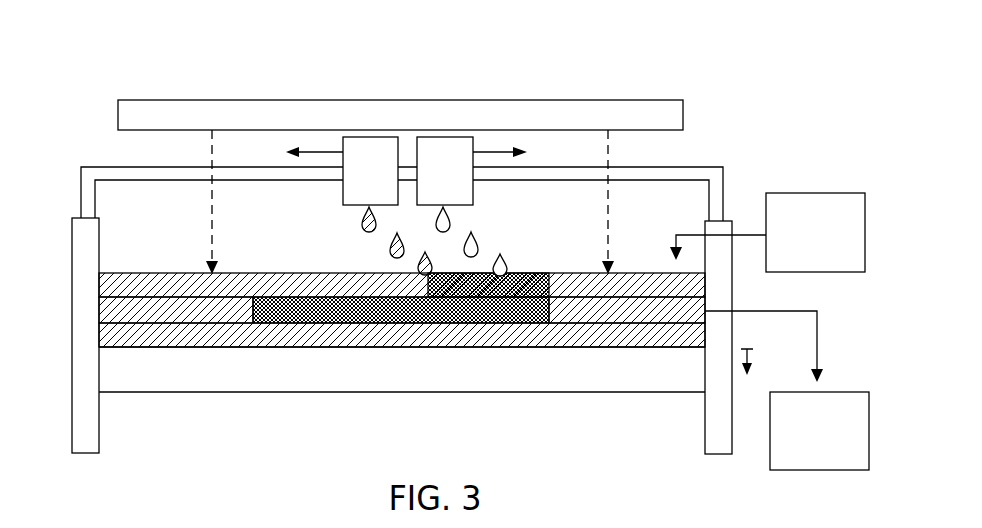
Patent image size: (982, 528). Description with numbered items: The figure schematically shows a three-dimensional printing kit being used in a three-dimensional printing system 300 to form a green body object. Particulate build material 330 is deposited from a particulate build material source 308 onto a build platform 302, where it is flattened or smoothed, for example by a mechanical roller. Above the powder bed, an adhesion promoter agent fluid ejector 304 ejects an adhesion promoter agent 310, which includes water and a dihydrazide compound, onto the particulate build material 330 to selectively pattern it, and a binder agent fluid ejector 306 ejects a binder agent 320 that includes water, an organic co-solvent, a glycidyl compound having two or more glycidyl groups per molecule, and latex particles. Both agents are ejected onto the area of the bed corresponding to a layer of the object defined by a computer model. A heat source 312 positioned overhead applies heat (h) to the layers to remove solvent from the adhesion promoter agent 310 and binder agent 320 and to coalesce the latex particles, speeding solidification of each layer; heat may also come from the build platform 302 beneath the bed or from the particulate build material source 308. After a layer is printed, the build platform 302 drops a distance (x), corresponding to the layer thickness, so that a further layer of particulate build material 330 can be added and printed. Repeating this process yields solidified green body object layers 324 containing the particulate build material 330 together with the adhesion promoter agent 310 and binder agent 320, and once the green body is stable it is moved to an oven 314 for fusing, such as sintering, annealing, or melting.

The three-dimensional printing system 300 is at (142, 44).
The build platform 302 is at (555, 358).
The adhesion promoter agent fluid ejector 304 is at (445, 171).
The binder agent fluid ejector 306 is at (370, 171).
The particulate build material source 308 is at (767, 232).
The adhesion promoter agent 310 is at (472, 245).
The heat source 312 is at (400, 115).
The oven 314 is at (787, 390).
The binder agent 320 is at (362, 224).
The solidified green body object layers 324 is at (368, 310).
The particulate build material 330 is at (162, 303).